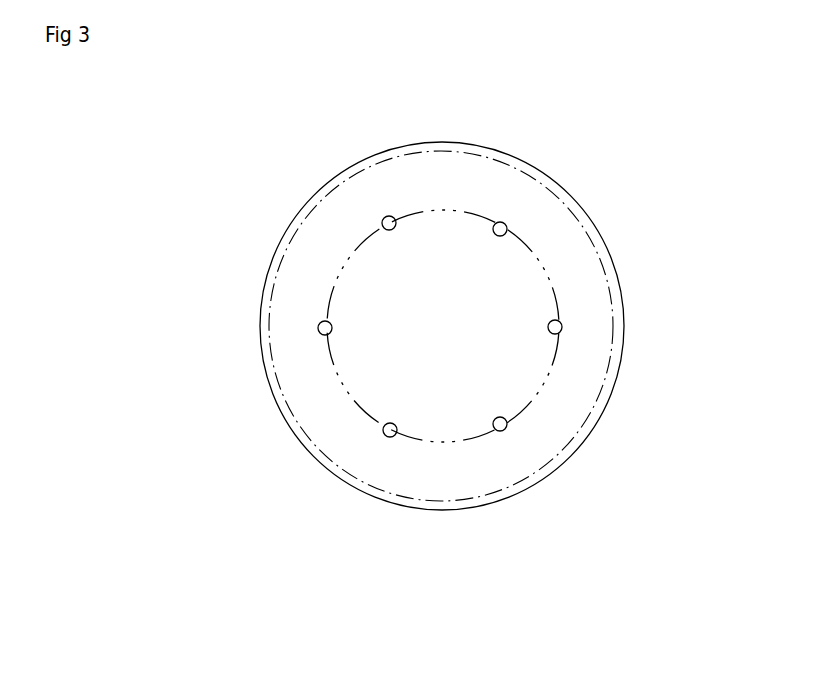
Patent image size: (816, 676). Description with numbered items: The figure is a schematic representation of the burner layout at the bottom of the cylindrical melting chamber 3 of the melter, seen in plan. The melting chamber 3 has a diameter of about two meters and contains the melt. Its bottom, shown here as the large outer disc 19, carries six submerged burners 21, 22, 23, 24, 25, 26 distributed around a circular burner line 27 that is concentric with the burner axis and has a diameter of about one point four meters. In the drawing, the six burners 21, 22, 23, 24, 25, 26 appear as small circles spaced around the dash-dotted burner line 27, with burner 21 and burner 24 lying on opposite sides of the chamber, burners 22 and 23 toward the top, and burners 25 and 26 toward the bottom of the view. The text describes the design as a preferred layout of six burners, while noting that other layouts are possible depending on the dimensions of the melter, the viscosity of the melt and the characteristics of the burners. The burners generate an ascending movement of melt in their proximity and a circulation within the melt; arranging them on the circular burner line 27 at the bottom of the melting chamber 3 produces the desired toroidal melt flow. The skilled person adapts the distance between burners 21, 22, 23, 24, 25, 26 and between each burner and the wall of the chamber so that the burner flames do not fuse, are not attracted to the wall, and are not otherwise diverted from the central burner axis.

The melting chamber 3 is at (256, 542).
The disc body 19 is at (607, 250).
The hole 21 is at (318, 329).
The hole 22 is at (383, 216).
The hole 23 is at (506, 222).
The hole 24 is at (562, 327).
The hole 25 is at (507, 421).
The hole 26 is at (387, 437).
The bolt circle 27 is at (545, 368).